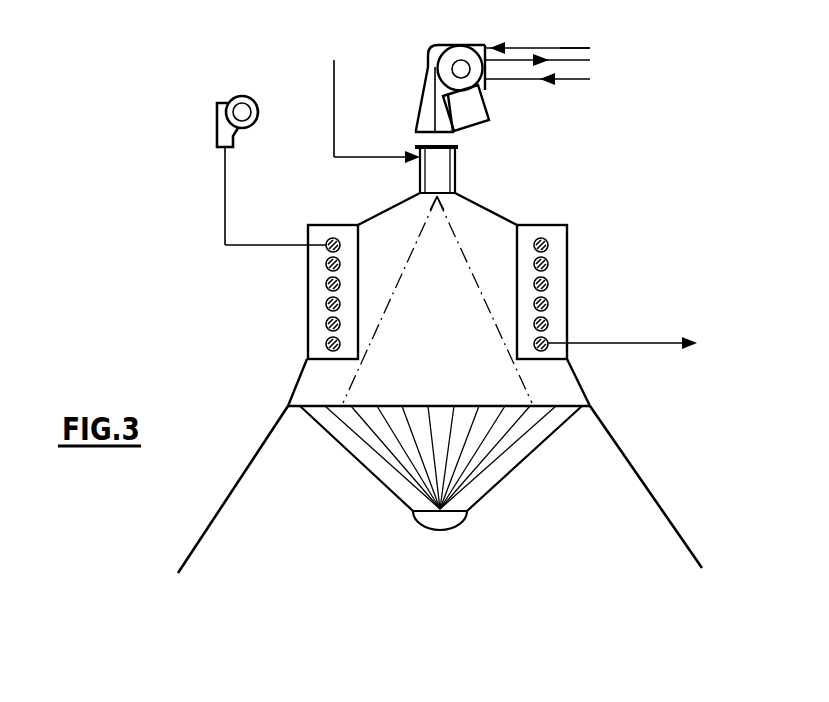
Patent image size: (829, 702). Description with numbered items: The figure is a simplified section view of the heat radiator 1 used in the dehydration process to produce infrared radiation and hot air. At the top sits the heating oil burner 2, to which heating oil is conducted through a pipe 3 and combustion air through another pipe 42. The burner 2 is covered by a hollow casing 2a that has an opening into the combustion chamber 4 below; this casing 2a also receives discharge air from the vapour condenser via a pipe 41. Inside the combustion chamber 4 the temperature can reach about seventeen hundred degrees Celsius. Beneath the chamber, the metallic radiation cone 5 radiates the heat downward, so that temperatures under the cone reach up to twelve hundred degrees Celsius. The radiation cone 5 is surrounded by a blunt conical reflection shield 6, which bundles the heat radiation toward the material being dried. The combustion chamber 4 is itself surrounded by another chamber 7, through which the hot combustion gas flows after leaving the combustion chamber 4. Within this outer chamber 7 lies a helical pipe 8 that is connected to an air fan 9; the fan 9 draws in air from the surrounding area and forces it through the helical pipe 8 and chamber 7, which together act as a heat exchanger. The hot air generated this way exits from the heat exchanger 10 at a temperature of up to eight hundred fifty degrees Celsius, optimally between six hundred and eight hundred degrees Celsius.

The heat radiator 1 is at (606, 251).
The heating oil burner 2 is at (440, 173).
The hollow casing 2a is at (420, 183).
The pipe 3 is at (580, 80).
The combustion chamber 4 is at (444, 344).
The pipe 41 is at (334, 80).
The pipe 42 is at (522, 46).
The metallic radiation cone 5 is at (487, 460).
The blunt conical reflection shield 6 is at (629, 450).
The chamber 7 is at (318, 282).
The helical pipe 8 is at (326, 304).
The air fan 9 is at (232, 100).
The heat exchanger 10 is at (613, 342).